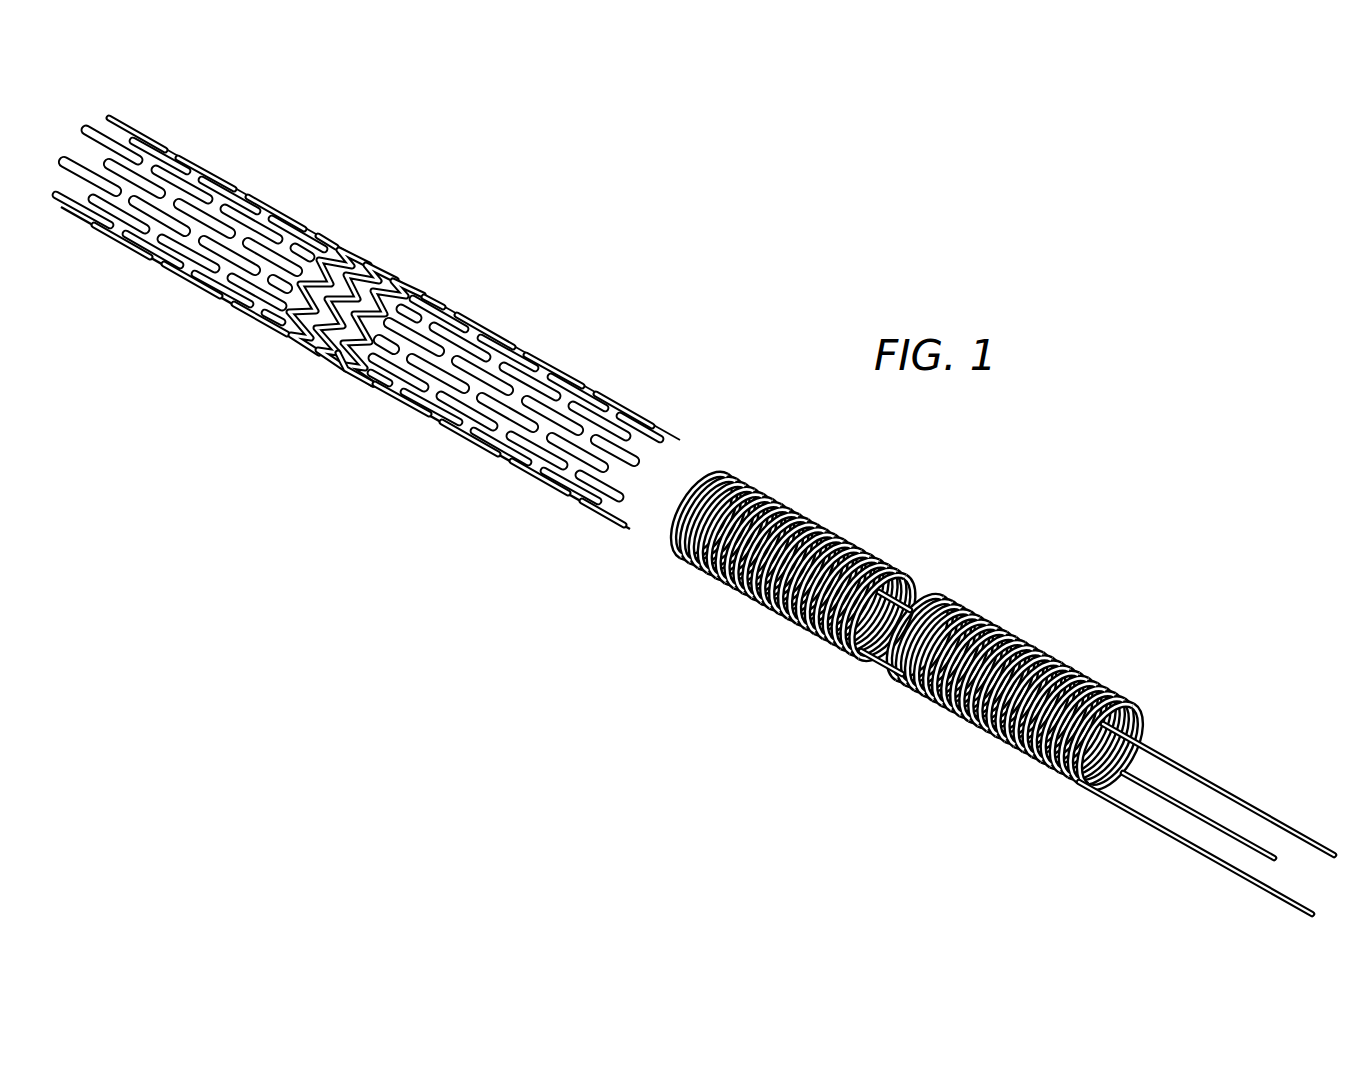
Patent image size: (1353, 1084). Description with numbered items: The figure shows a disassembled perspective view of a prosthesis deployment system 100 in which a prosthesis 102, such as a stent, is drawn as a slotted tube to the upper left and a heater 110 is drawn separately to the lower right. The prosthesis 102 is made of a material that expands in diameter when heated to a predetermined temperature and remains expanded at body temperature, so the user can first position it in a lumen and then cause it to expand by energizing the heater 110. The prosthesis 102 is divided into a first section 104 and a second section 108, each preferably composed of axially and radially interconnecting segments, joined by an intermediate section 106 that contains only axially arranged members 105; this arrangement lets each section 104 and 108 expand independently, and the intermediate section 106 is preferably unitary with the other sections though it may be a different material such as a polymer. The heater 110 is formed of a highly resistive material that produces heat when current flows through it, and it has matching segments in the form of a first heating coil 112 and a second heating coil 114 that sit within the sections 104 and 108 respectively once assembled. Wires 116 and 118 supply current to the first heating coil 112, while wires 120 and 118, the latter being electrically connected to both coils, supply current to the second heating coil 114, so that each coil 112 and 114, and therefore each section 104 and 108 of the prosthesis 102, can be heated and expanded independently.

The prosthesis deployment system 100 is at (412, 670).
The prosthesis 102 is at (324, 402).
The first section 104 is at (260, 171).
The axially arranged members 105 is at (340, 352).
The intermediate section 106 is at (402, 252).
The second section 108 is at (574, 325).
The heater 110 is at (714, 606).
The first heating coil 112 is at (852, 537).
The second heating coil 114 is at (1030, 640).
The wire 116 is at (897, 597).
The wire 118 is at (858, 640).
The wire 120 is at (1183, 800).